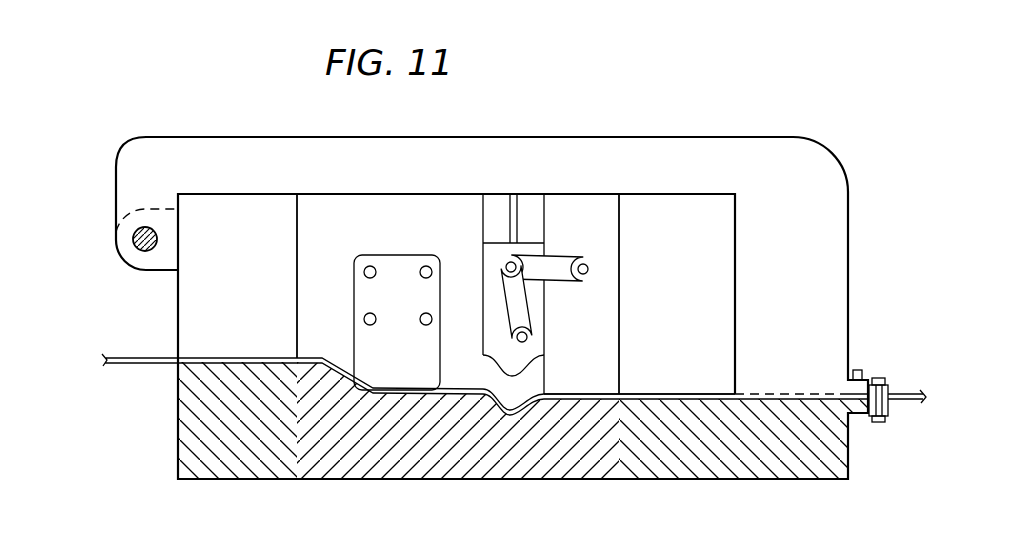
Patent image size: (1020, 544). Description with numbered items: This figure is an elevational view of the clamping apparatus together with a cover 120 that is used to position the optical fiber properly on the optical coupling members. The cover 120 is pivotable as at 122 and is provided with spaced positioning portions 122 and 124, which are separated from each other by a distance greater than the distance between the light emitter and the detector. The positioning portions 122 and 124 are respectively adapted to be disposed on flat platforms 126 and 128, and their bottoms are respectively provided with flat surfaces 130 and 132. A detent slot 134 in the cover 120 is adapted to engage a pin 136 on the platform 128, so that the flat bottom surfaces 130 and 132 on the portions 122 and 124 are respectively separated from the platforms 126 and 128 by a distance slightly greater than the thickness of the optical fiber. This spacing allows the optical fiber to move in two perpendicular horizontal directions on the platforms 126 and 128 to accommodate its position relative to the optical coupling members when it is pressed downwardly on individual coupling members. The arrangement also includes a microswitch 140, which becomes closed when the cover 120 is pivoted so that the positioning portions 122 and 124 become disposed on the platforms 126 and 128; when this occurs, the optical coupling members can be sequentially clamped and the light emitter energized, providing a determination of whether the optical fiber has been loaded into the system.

The cover 120 is at (497, 130).
The positioning portion 122 is at (133, 235).
The positioning portion 124 is at (712, 255).
The flat platform 126 is at (237, 365).
The flat platform 128 is at (783, 400).
The flat surface 130 is at (222, 357).
The flat surface 132 is at (662, 393).
The detent slot 134 is at (772, 393).
The pin 136 is at (878, 420).
The microswitch 140 is at (856, 370).